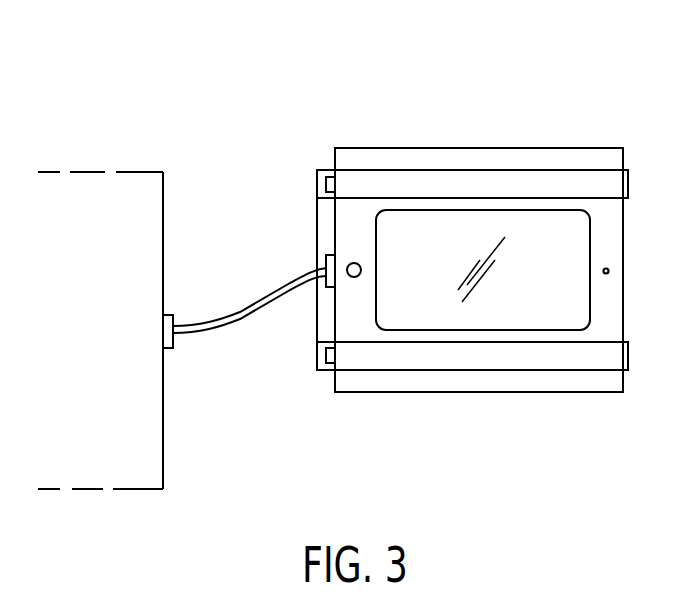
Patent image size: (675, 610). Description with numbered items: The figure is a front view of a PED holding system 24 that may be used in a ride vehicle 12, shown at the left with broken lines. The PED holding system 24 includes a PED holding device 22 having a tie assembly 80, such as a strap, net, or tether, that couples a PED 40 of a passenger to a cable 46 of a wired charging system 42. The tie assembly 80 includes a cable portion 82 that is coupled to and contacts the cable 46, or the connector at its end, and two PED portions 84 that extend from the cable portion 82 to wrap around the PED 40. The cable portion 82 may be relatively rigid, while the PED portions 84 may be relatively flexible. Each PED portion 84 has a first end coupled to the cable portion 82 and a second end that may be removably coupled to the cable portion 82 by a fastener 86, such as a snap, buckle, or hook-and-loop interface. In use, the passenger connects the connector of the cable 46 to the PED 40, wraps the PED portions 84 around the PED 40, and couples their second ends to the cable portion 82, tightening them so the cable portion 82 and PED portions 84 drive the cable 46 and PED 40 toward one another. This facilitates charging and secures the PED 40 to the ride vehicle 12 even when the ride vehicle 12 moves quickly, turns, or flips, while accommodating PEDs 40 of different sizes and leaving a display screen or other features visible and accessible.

The ride vehicle 12 is at (186, 439).
The PED holding device 22 is at (407, 107).
The PED holding system 24 is at (416, 69).
The PED 40 is at (479, 147).
The wired charging system 42 is at (292, 302).
The cable 46 is at (236, 317).
The tie assembly 80 is at (296, 167).
The cable portion 82 is at (326, 163).
The PED portions 84 is at (468, 372).
The fastener 86 is at (313, 185).